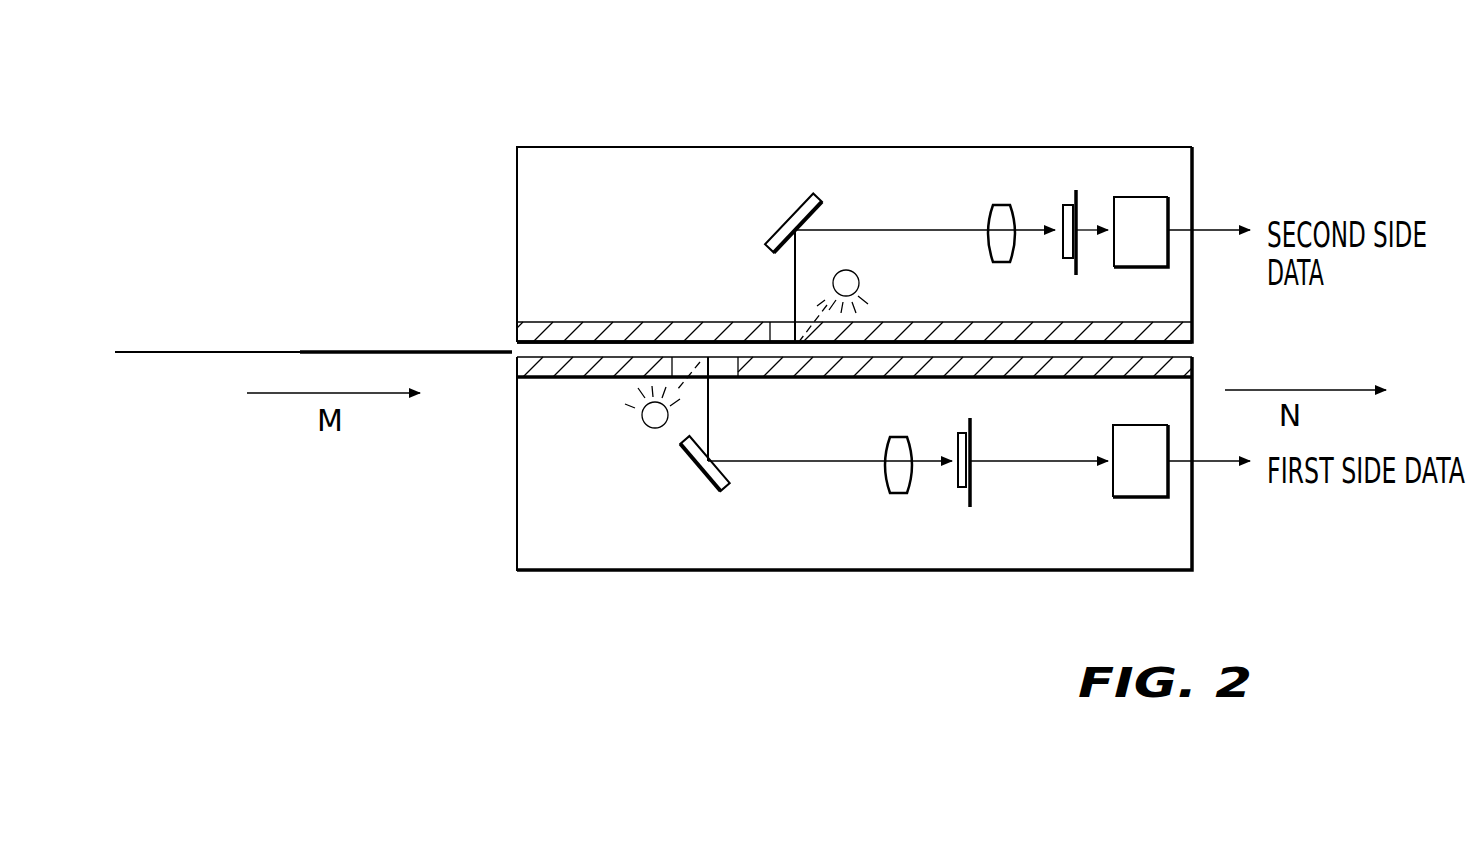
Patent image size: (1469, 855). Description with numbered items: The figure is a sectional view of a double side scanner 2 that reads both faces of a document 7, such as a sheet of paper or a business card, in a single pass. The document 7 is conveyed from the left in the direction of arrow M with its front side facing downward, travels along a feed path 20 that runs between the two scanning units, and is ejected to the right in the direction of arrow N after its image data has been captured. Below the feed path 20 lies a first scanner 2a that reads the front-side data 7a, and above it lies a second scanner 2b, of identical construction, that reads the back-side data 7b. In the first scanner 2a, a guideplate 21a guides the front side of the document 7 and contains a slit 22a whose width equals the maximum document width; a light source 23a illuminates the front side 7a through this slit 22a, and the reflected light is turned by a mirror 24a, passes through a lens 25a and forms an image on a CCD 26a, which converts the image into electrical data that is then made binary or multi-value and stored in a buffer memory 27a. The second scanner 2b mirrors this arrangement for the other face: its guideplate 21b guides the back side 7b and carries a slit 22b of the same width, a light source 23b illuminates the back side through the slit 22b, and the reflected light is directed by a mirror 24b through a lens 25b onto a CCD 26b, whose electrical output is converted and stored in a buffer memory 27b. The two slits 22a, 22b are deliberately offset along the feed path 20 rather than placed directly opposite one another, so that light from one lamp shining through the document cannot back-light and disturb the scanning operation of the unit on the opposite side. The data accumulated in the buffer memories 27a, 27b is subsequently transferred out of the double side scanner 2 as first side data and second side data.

The double side scanner 2 is at (854, 334).
The first scanner 2a is at (828, 572).
The second scanner 2b is at (767, 147).
The document 7 is at (323, 338).
The front-side data 7a is at (466, 355).
The back-side data 7b is at (423, 350).
The feed path 20 is at (598, 350).
The guideplate 21a is at (560, 378).
The guideplate 21b is at (663, 330).
The slit 22a is at (722, 380).
The slit 22b is at (780, 325).
The light source 23a is at (652, 428).
The light source 23b is at (855, 278).
The mirror 24a is at (706, 475).
The mirror 24b is at (790, 212).
The lens 25a is at (890, 475).
The lens 25b is at (1000, 205).
The CCD 26a is at (958, 488).
The CCD 26b is at (1062, 245).
The buffer memory 27a is at (1112, 485).
The buffer memory 27b is at (1140, 197).